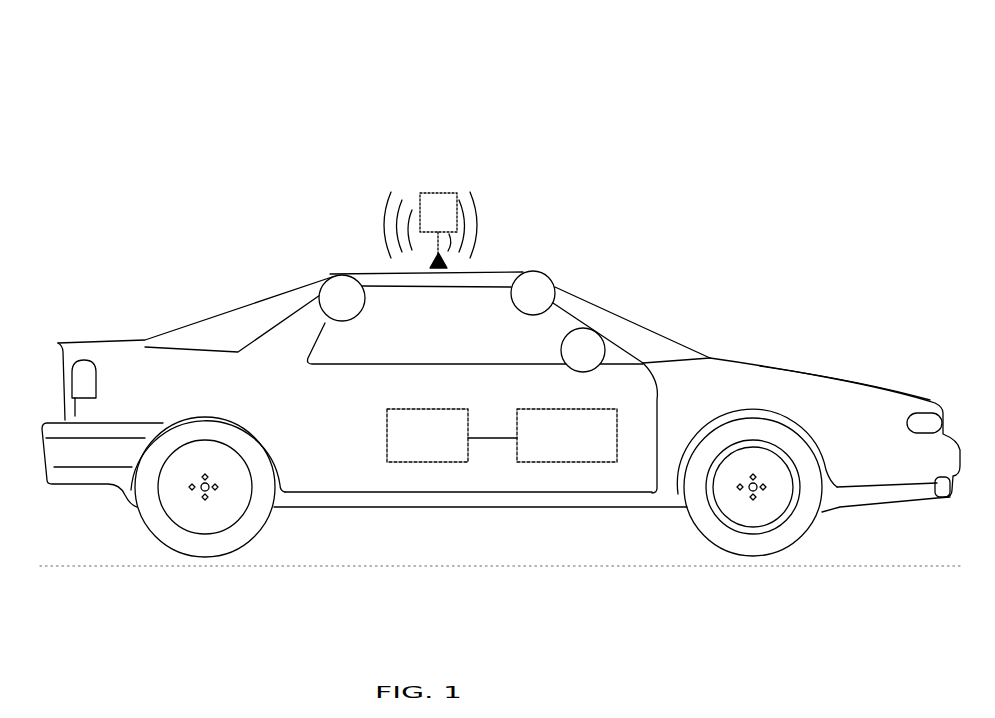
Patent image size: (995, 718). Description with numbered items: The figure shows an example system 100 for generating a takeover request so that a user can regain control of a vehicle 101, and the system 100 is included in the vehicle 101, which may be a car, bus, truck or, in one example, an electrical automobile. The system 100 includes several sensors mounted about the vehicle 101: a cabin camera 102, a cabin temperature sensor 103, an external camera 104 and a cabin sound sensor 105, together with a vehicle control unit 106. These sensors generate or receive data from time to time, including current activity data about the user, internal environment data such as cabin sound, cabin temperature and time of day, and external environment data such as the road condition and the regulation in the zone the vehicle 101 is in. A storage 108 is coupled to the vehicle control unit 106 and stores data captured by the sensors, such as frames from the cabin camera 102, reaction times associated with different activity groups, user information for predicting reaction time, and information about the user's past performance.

The system 100 is at (730, 314).
The vehicle 101 is at (475, 473).
The cabin camera 102 is at (538, 270).
The cabin temperature sensor 103 is at (590, 328).
The external camera 104 is at (460, 190).
The cabin sound sensor 105 is at (340, 274).
The vehicle control unit 106 is at (412, 458).
The storage 108 is at (554, 458).